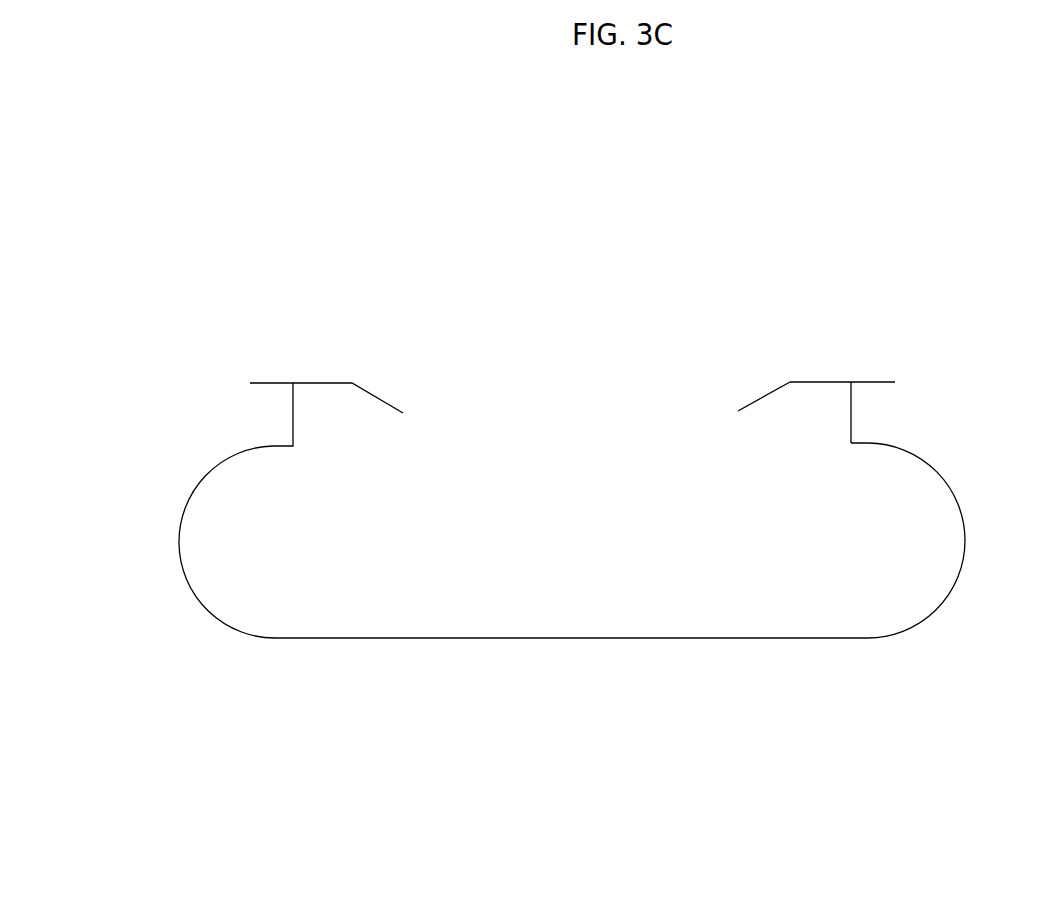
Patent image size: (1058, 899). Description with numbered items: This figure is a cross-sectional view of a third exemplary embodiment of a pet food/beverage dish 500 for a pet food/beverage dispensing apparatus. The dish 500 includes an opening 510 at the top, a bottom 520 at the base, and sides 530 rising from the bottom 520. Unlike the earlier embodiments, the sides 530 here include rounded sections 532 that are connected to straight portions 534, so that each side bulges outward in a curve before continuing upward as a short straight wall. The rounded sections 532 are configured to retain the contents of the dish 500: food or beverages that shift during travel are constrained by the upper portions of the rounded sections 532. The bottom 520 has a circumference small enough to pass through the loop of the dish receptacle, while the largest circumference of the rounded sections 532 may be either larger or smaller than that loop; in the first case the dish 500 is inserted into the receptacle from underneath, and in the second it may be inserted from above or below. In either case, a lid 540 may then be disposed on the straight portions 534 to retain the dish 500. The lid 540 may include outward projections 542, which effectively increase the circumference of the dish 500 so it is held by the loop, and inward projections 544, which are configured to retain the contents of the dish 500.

The dish 500 is at (340, 267).
The opening 510 is at (560, 397).
The bottom 520 is at (582, 638).
The sides 530 is at (172, 483).
The rounded sections 532 is at (190, 563).
The straight portions 534 is at (293, 420).
The lid 540 is at (835, 357).
The outward projections 542 is at (877, 382).
The inward projections 544 is at (770, 393).